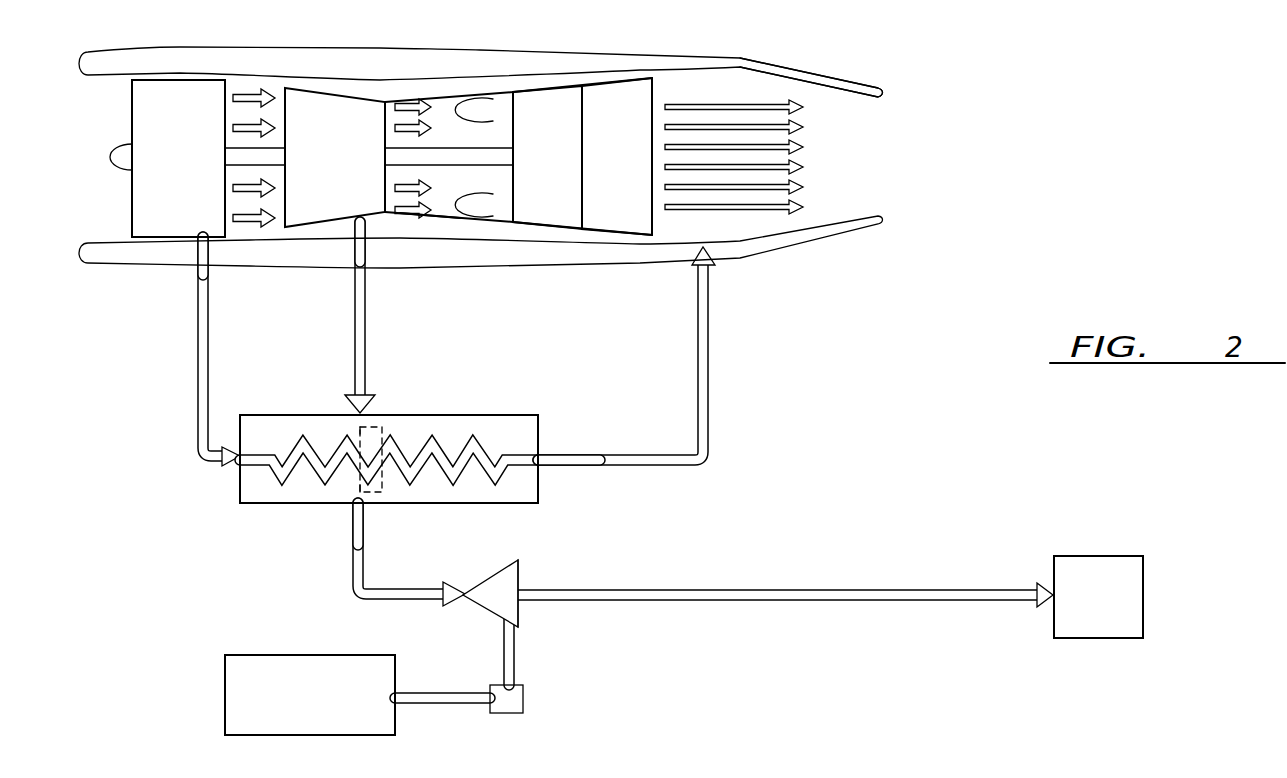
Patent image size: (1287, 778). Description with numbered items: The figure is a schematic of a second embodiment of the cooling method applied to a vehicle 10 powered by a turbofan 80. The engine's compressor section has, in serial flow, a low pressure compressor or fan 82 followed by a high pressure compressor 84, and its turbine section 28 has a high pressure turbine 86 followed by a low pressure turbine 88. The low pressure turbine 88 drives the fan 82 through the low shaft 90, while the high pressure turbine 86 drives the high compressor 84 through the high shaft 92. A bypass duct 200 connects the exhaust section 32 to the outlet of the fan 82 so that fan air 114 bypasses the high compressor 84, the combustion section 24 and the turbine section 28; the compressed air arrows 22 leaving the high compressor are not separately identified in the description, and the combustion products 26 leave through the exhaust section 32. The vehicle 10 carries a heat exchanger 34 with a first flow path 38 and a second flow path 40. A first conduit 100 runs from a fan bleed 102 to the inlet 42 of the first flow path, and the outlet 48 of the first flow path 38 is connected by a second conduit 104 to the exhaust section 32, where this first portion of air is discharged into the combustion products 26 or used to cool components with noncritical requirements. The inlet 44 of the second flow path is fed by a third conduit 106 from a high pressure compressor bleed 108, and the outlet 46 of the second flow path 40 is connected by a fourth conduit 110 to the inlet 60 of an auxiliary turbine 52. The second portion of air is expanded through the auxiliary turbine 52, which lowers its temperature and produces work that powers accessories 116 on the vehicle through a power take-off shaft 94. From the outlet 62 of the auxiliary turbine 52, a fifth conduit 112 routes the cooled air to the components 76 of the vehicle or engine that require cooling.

The vehicle 10 is at (808, 688).
The compressed air flow 22 is at (433, 128).
The combustion section 24 is at (495, 97).
The combustion products 26 is at (806, 187).
The turbine section 28 is at (563, 218).
The exhaust section 32 is at (725, 90).
The heat exchanger 34 is at (305, 505).
The first flow path 38 is at (475, 438).
The second flow path 40 is at (362, 430).
The inlet of the first flow path 42 is at (238, 463).
The inlet of the second flow path 44 is at (367, 415).
The outlet of the second flow path 46 is at (352, 508).
The outlet of the first flow path 48 is at (538, 455).
The auxiliary turbine 52 is at (518, 570).
The inlet of the auxiliary turbine 60 is at (463, 590).
The outlet of the auxiliary turbine 62 is at (518, 603).
The components 76 is at (1113, 556).
The turbofan 80 is at (592, 39).
The fan 82 is at (205, 88).
The high pressure compressor 84 is at (352, 103).
The high pressure turbine 86 is at (563, 171).
The low pressure turbine 88 is at (637, 171).
The low shaft 90 is at (235, 152).
The high shaft 92 is at (500, 150).
The power take-off shaft 94 is at (463, 697).
The first conduit 100 is at (198, 372).
The fan bleed 102 is at (192, 243).
The second conduit 104 is at (708, 400).
The third conduit 106 is at (365, 345).
The high pressure compressor bleed 108 is at (353, 230).
The fourth conduit 110 is at (372, 597).
The fifth conduit 112 is at (783, 590).
The fan air 114 is at (280, 128).
The accessories 116 is at (225, 688).
The bypass duct 200 is at (428, 228).